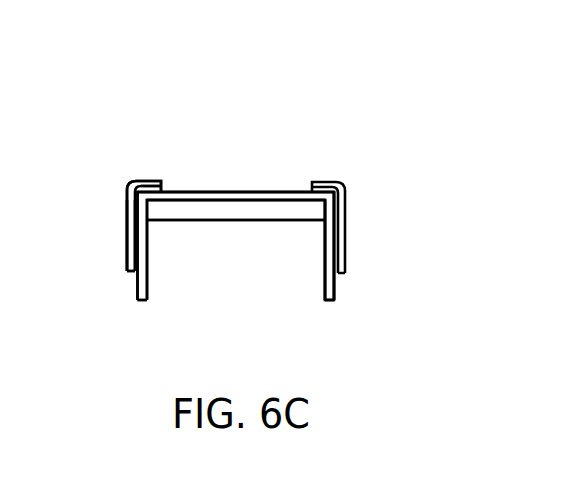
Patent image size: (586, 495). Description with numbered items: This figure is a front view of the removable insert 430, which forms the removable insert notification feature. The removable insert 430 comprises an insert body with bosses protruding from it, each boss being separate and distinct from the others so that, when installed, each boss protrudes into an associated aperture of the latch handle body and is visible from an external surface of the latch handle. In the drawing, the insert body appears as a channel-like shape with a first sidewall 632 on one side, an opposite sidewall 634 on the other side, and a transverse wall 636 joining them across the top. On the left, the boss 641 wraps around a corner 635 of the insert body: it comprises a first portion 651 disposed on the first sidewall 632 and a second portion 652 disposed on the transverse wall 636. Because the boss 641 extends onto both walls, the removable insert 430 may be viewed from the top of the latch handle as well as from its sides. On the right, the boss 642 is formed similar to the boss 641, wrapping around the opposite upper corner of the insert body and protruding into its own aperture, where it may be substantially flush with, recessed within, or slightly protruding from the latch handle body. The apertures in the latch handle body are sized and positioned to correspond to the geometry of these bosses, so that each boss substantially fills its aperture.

The removable insert 430 is at (240, 116).
The first sidewall 632 is at (148, 273).
The side leg of base bracket 634 is at (325, 282).
The transverse wall 636 is at (232, 192).
The corner 635 is at (137, 181).
The boss 641 is at (121, 184).
The first portion 651 is at (128, 244).
The second portion 652 is at (150, 182).
The boss 642 is at (336, 183).